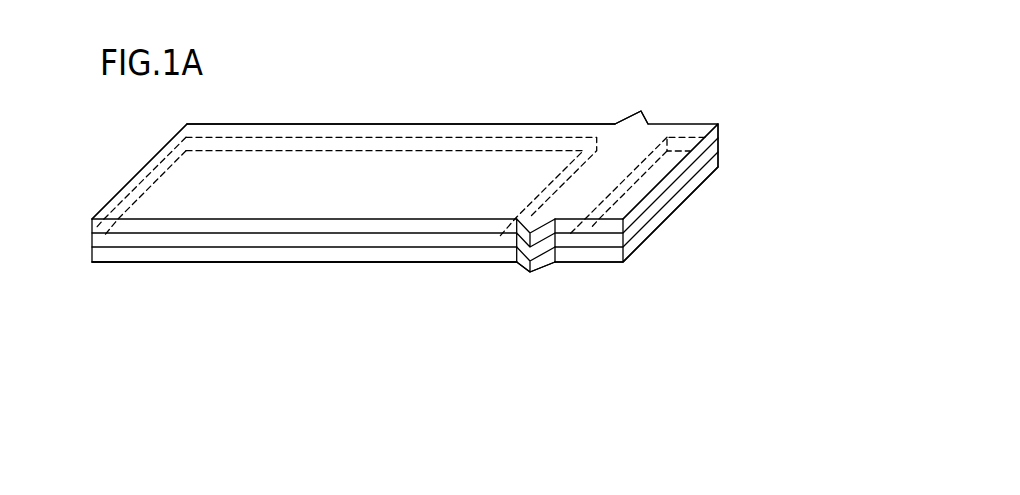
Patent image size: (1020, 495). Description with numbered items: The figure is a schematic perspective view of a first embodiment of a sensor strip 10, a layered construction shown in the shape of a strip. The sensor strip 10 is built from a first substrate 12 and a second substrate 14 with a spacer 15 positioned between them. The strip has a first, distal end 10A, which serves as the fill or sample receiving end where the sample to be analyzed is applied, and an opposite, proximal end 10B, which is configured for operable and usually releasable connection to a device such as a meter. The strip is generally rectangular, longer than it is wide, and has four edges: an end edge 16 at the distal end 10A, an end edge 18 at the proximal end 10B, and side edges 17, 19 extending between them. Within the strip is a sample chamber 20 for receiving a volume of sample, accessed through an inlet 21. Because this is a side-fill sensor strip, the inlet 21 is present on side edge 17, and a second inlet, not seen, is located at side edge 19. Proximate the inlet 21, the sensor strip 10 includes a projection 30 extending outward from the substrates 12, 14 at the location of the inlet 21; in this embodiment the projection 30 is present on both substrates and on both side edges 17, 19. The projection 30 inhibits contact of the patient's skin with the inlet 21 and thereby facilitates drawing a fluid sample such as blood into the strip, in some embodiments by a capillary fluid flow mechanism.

The sensor strip 10 is at (692, 60).
The distal end 10A is at (721, 130).
The proximal end 10B is at (168, 145).
The first substrate 12 is at (90, 227).
The second substrate 14 is at (90, 255).
The spacer 15 is at (90, 243).
The end edge 16 is at (667, 218).
The side edge 17 is at (287, 262).
The end edge 18 is at (142, 172).
The side edge 19 is at (377, 123).
The sample chamber 20 is at (568, 162).
The inlet 21 is at (520, 238).
The projection 30 is at (645, 115).